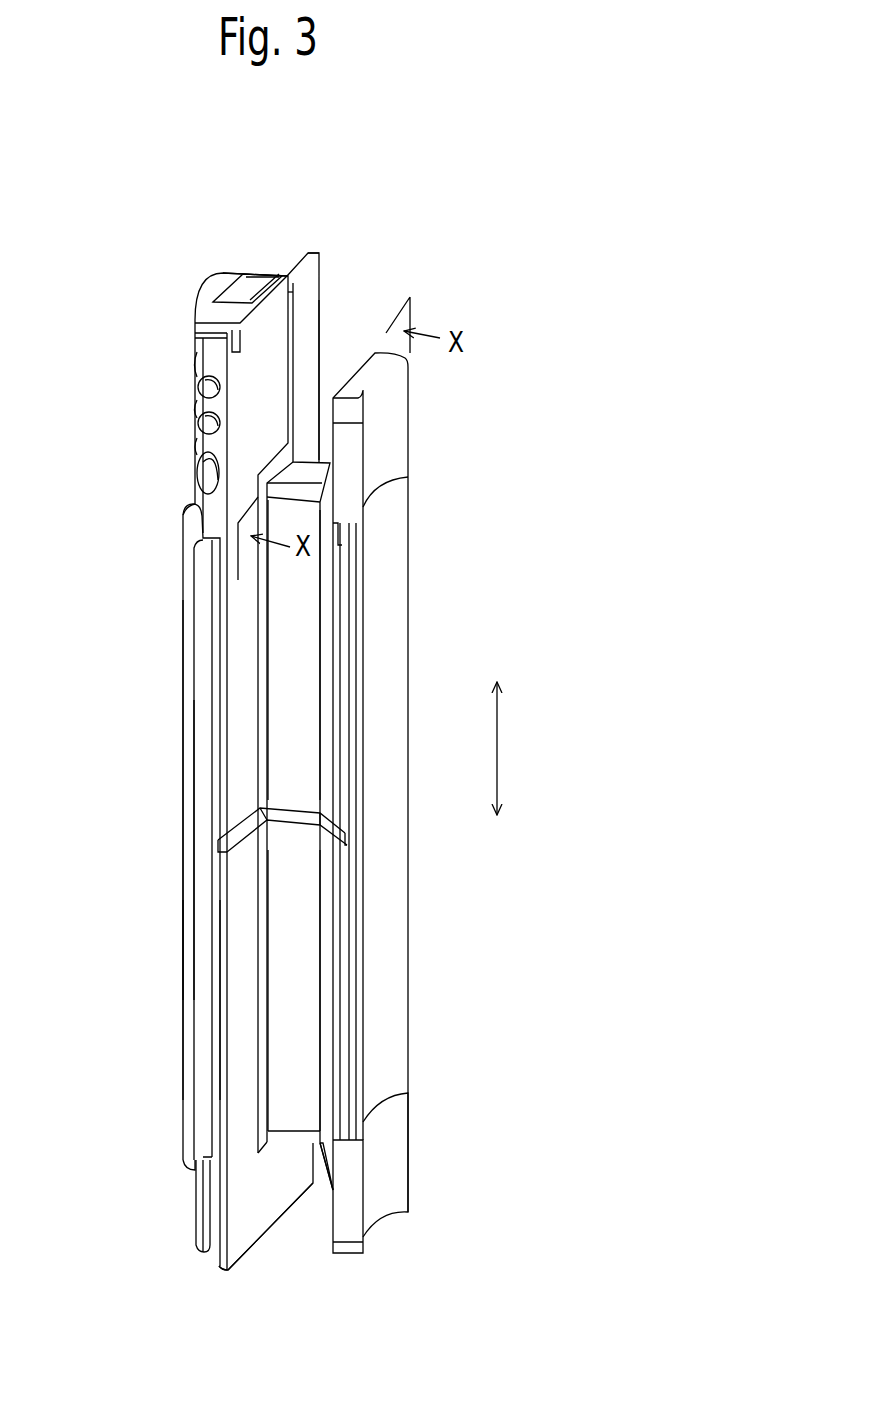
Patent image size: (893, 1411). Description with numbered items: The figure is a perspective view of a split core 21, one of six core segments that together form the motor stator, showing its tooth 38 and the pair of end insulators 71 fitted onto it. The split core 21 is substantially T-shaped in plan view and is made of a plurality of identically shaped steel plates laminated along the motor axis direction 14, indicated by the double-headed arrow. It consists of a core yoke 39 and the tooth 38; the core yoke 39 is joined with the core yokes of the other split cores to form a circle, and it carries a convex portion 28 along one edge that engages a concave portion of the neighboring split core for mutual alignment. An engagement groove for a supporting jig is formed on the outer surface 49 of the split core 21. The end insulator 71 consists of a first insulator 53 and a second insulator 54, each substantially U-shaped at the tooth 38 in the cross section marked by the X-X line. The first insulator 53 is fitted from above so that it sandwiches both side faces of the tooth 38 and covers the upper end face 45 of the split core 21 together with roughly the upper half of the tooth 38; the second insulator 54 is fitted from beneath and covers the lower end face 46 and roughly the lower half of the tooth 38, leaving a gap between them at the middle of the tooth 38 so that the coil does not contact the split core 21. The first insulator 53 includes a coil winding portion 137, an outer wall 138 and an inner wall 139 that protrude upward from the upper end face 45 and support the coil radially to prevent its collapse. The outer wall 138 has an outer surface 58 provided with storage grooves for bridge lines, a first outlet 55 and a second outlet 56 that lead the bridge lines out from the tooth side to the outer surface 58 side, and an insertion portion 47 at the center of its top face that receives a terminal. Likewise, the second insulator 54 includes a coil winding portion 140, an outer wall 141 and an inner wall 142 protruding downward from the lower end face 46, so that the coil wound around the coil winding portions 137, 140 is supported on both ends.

The motor axis direction 14 is at (500, 748).
The split core 21 is at (165, 920).
The convex portion 28 is at (197, 860).
The tooth 38 is at (313, 1230).
The core yoke 39 is at (256, 239).
The upper end face 45 is at (183, 504).
The lower end face 46 is at (184, 1180).
The insertion portion 47 is at (248, 288).
The outer surface 49 is at (183, 773).
The first insulator 53 is at (437, 310).
The second insulator 54 is at (430, 1196).
The first outlet 55 is at (291, 330).
The second outlet 56 is at (184, 328).
The outer surface 58 is at (184, 496).
The end insulator 71 is at (349, 236).
The coil winding portion 137 is at (318, 655).
The outer wall 138 is at (302, 347).
The inner wall 139 is at (382, 427).
The coil winding portion 140 is at (318, 980).
The outer wall 141 is at (258, 1205).
The inner wall 142 is at (385, 1152).